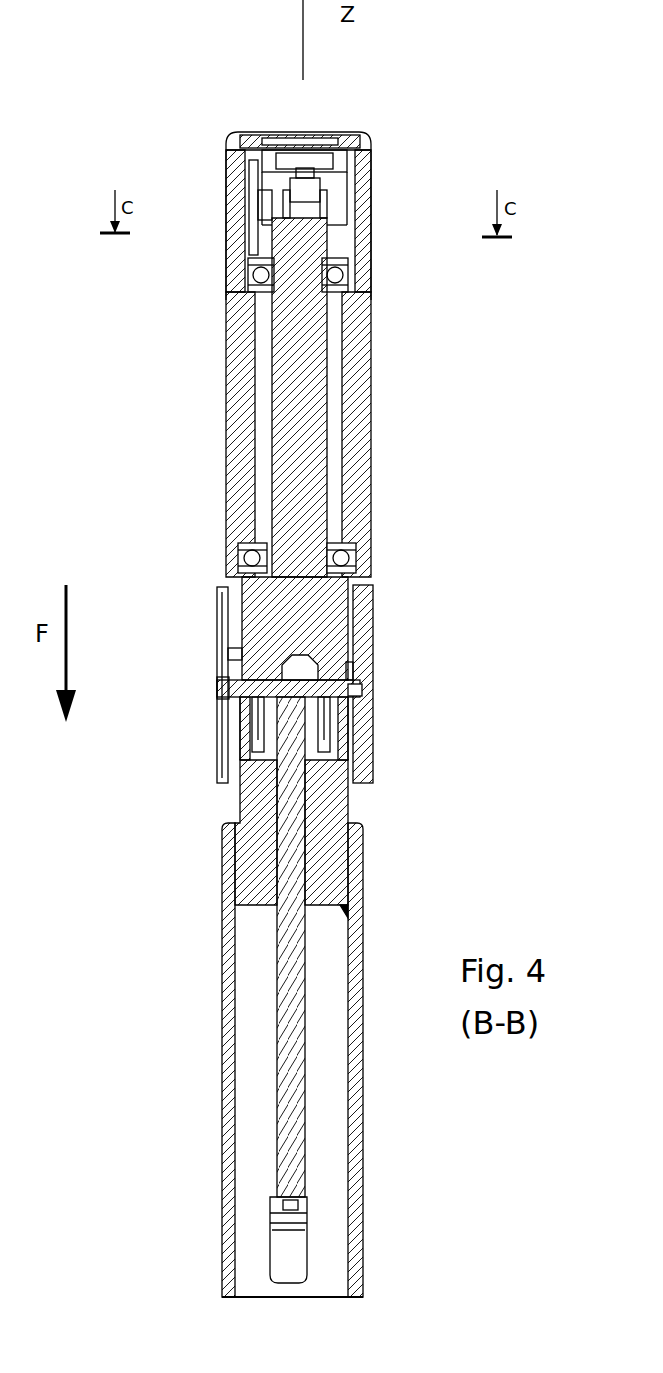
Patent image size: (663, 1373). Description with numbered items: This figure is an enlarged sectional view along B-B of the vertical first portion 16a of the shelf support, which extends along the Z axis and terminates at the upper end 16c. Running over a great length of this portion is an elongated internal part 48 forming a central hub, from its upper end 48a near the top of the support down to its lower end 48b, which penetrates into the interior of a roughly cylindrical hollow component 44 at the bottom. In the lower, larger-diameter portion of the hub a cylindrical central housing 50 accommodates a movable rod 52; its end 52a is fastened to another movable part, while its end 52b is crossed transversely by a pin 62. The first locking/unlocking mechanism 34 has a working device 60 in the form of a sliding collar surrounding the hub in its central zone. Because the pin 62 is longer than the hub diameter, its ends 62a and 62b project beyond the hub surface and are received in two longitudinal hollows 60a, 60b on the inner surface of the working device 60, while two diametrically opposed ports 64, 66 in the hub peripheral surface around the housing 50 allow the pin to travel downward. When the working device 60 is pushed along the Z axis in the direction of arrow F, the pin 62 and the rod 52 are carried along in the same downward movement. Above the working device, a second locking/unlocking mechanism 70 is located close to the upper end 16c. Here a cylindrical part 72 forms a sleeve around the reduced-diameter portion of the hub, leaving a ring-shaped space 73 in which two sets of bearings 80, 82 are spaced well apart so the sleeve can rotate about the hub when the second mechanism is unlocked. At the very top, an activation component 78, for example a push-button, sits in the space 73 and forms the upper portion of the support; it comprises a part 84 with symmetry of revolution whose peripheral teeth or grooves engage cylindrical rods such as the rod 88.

The first portion 16a is at (185, 731).
The upper end 16c is at (356, 105).
The first locking/unlocking mechanism 34 is at (385, 712).
The hollow component 44 is at (220, 1035).
The elongated internal part 48 is at (312, 418).
The upper end 48a is at (345, 192).
The lower end 48b is at (352, 905).
The cylindrical central housing 50 is at (318, 800).
The movable part 52 is at (295, 995).
The end 52a is at (290, 1254).
The end 52b is at (360, 678).
The working device 60 is at (365, 603).
The longitudinal hollow 60a is at (228, 656).
The longitudinal hollow 60b is at (373, 672).
The pin 62 is at (235, 680).
The end 62a is at (228, 686).
The end 62b is at (373, 684).
The port 64 is at (228, 758).
The port 66 is at (353, 750).
The second locking/unlocking mechanism 70 is at (387, 131).
The cylindrical part 72 is at (238, 320).
The ring-shaped space 73 is at (345, 337).
The activation component 78 is at (300, 131).
The bearings 80 is at (343, 276).
The bearings 82 is at (355, 552).
The part 84 is at (340, 232).
The cylindrical rod 88 is at (248, 215).